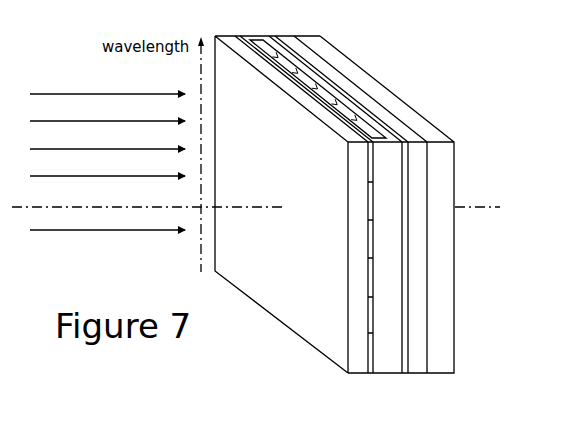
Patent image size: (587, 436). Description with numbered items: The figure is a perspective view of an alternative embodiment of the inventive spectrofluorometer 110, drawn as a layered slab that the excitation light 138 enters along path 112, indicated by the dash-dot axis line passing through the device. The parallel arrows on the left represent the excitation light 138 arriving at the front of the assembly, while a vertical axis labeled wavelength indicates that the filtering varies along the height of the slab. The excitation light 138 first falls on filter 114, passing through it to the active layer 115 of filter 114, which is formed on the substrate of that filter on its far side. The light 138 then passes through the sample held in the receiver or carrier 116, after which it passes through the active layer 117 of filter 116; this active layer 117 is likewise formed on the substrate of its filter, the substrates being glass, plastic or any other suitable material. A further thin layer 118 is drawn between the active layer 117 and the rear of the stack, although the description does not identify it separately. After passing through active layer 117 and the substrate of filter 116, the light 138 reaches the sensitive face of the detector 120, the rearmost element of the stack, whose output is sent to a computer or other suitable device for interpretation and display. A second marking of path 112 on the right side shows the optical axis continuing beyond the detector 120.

The spectrofluorometer 110 is at (248, 34).
The path 112 is at (118, 202).
The filter 114 is at (362, 371).
The active layer 115 is at (372, 350).
The receiver or carrier 116 is at (383, 368).
The active layer 117 is at (405, 370).
The fourth layer 118 is at (420, 362).
The detector 120 is at (442, 367).
The excitation light 138 is at (75, 78).